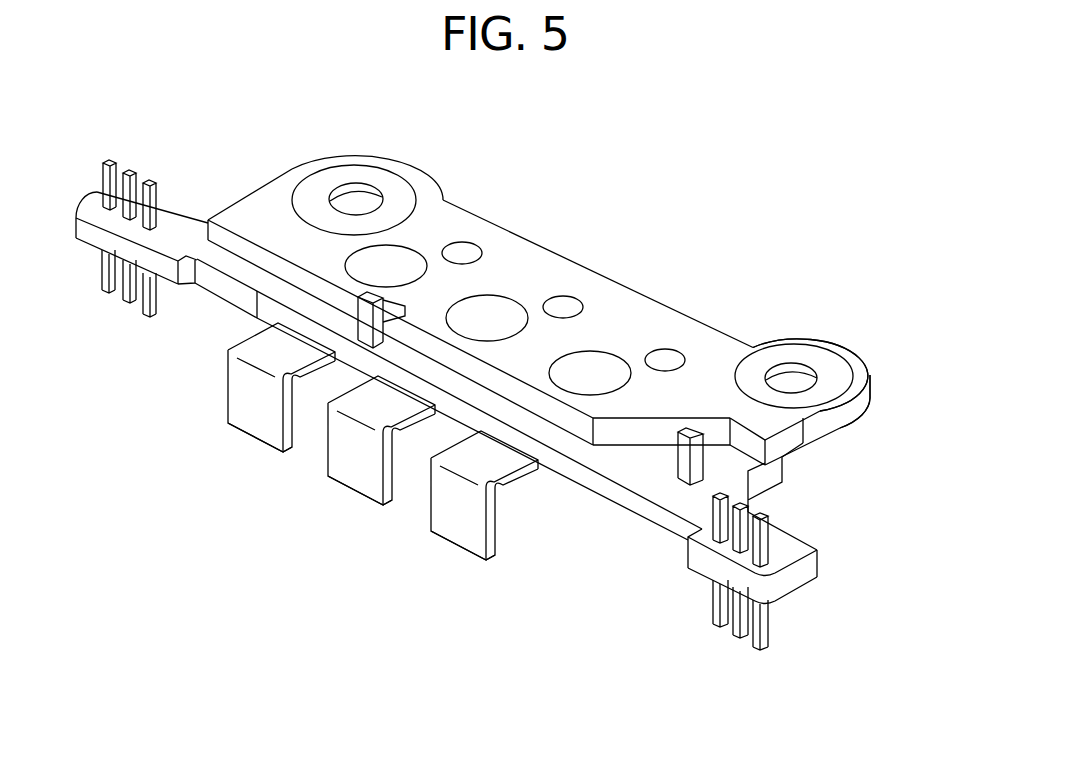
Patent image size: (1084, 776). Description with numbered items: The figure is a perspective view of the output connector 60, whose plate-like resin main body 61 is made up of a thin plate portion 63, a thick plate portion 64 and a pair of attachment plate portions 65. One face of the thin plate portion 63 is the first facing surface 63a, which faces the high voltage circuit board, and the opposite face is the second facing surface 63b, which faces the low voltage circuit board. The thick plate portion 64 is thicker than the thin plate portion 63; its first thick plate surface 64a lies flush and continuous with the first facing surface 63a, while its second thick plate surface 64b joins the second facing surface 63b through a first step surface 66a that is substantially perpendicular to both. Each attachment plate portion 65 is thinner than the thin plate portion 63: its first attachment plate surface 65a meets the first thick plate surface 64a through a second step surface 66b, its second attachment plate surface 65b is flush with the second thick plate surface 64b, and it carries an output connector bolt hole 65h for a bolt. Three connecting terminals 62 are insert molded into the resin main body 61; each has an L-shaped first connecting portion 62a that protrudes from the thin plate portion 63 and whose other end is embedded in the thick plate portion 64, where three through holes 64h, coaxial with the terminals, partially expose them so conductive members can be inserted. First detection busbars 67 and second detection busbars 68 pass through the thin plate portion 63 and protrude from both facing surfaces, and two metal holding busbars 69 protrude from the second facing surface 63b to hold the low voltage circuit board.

The output connector 60 is at (302, 167).
The resin main body 61 is at (848, 345).
The connecting terminal 62 is at (226, 370).
The first connecting portion 62a is at (250, 437).
The thin plate portion 63 is at (650, 490).
The first facing surface 63a is at (657, 535).
The second facing surface 63b is at (638, 462).
The thick plate portion 64 is at (518, 236).
The first thick plate surface 64a is at (766, 488).
The second thick plate surface 64b is at (615, 288).
The through hole 64h is at (407, 264).
The attachment plate portion 65 is at (378, 166).
The first attachment plate surface 65a is at (856, 427).
The second attachment plate surface 65b is at (421, 170).
The output connector bolt hole 65h is at (338, 198).
The first step surface 66a is at (497, 383).
The second step surface 66b is at (786, 467).
The first detection busbar 67 is at (152, 178).
The second detection busbar 68 is at (762, 650).
The holding busbar 69 is at (395, 306).